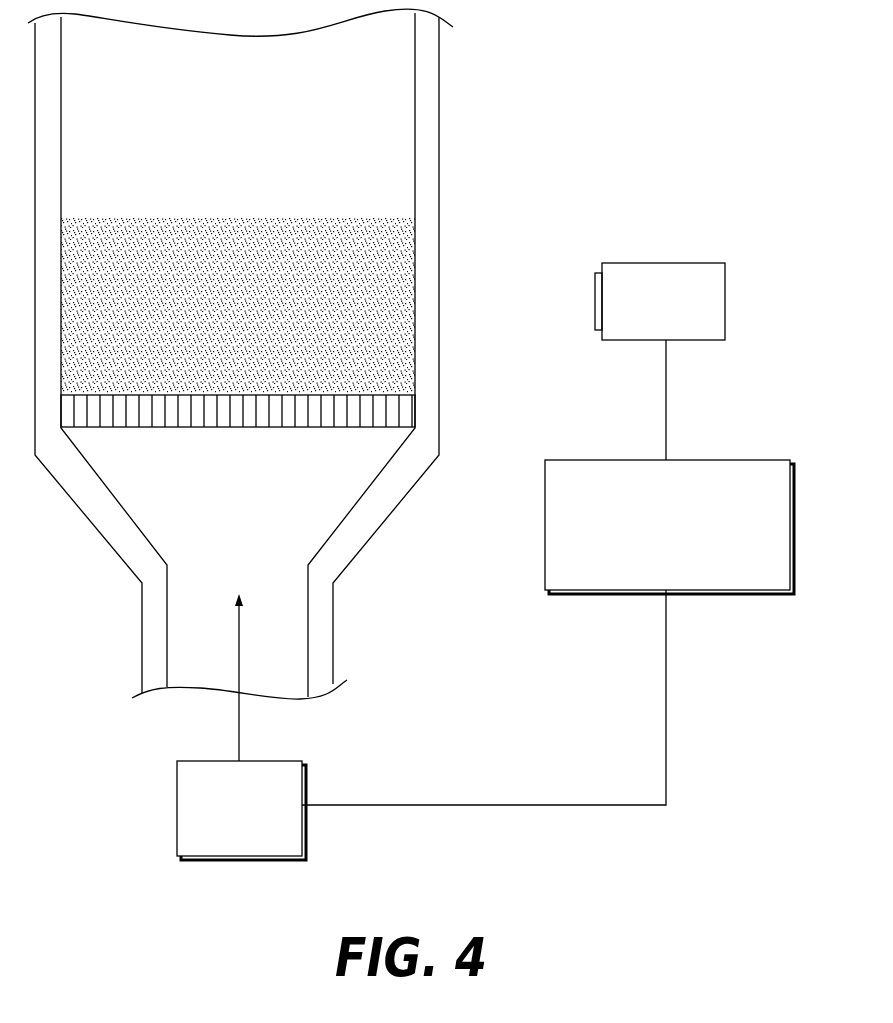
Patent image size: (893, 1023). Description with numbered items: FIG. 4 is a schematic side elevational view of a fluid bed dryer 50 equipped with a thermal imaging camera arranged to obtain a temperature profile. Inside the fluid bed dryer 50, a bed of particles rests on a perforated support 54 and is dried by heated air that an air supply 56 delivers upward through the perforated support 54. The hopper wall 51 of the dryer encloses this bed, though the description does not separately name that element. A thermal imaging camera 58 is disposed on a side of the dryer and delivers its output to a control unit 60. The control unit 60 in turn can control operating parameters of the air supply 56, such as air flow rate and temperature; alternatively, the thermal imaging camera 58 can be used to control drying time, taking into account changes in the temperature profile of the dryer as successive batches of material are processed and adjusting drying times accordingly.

The fluid bed dryer 50 is at (411, 434).
The hopper 51 is at (390, 280).
The perforated support 54 is at (243, 428).
The air supply 56 is at (302, 775).
The thermal imaging camera 58 is at (665, 261).
The control unit 60 is at (545, 521).